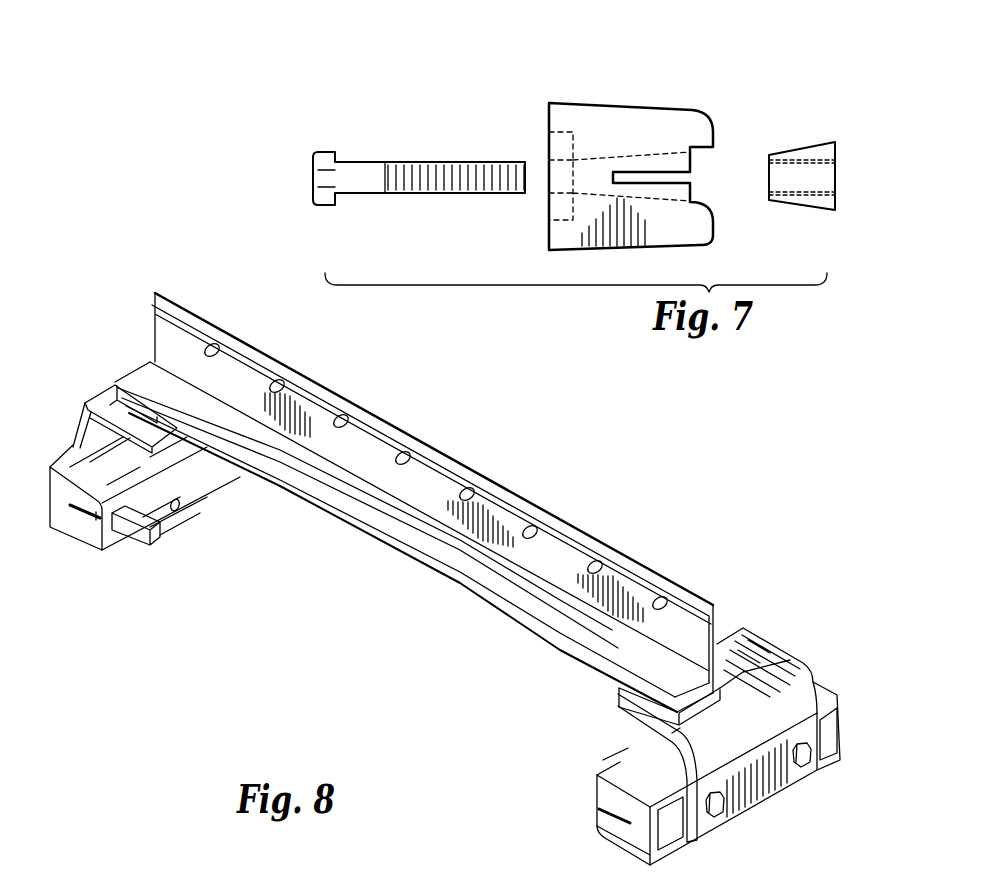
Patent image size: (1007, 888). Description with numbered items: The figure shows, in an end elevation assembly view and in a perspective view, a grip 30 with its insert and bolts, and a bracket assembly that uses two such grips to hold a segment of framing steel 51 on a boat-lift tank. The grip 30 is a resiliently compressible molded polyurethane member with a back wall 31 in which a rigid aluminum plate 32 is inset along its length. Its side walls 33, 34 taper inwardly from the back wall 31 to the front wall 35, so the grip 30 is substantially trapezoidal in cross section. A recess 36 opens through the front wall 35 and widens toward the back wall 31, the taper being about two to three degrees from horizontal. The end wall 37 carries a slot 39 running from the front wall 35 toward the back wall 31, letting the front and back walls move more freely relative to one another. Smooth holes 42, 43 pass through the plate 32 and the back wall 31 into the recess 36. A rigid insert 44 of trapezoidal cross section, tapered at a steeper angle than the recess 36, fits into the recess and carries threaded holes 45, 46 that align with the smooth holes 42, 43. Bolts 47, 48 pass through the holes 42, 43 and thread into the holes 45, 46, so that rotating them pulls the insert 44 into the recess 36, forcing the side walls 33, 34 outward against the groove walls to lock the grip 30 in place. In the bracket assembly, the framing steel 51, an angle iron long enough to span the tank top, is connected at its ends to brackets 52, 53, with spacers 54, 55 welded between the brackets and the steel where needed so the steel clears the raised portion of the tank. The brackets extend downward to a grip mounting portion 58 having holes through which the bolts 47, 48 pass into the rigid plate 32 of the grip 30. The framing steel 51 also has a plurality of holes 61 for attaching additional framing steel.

In FIG. 7, the grip 30 is at (591, 141).
In FIG. 8, the grip 30 is at (449, 586).
In FIG. 8, the back wall 31 is at (838, 762).
In FIG. 7, the rigid plate 32 is at (558, 208).
In FIG. 8, the rigid plate 32 is at (835, 735).
In FIG. 8, the side wall 33 is at (813, 690).
In FIG. 8, the side wall 34 is at (612, 842).
In FIG. 8, the front wall 35 is at (118, 543).
In FIG. 7, the recess 36 is at (707, 163).
In FIG. 8, the recess 36 is at (767, 670).
In FIG. 8, the end wall 37 is at (607, 828).
In FIG. 7, the slot 39 is at (640, 175).
In FIG. 8, the slot 39 is at (600, 814).
In FIG. 7, the smooth hole 42 is at (601, 125).
In FIG. 7, the smooth hole 43 is at (590, 163).
In FIG. 7, the rigid insert 44 is at (814, 162).
In FIG. 8, the rigid insert 44 is at (203, 493).
In FIG. 7, the threaded hole 45 is at (814, 209).
In FIG. 7, the threaded hole 46 is at (788, 183).
In FIG. 7, the bolt 47 is at (419, 150).
In FIG. 8, the bolt 47 is at (717, 810).
In FIG. 7, the bolt 48 is at (453, 163).
In FIG. 8, the bolt 48 is at (807, 767).
In FIG. 8, the framing steel 51 is at (414, 502).
In FIG. 8, the bracket 52 is at (107, 402).
In FIG. 8, the bracket 53 is at (790, 645).
In FIG. 8, the spacer 54 is at (106, 402).
In FIG. 8, the spacer 55 is at (617, 680).
In FIG. 8, the grip mounting portion 58 is at (90, 403).
In FIG. 8, the holes 61 is at (398, 450).